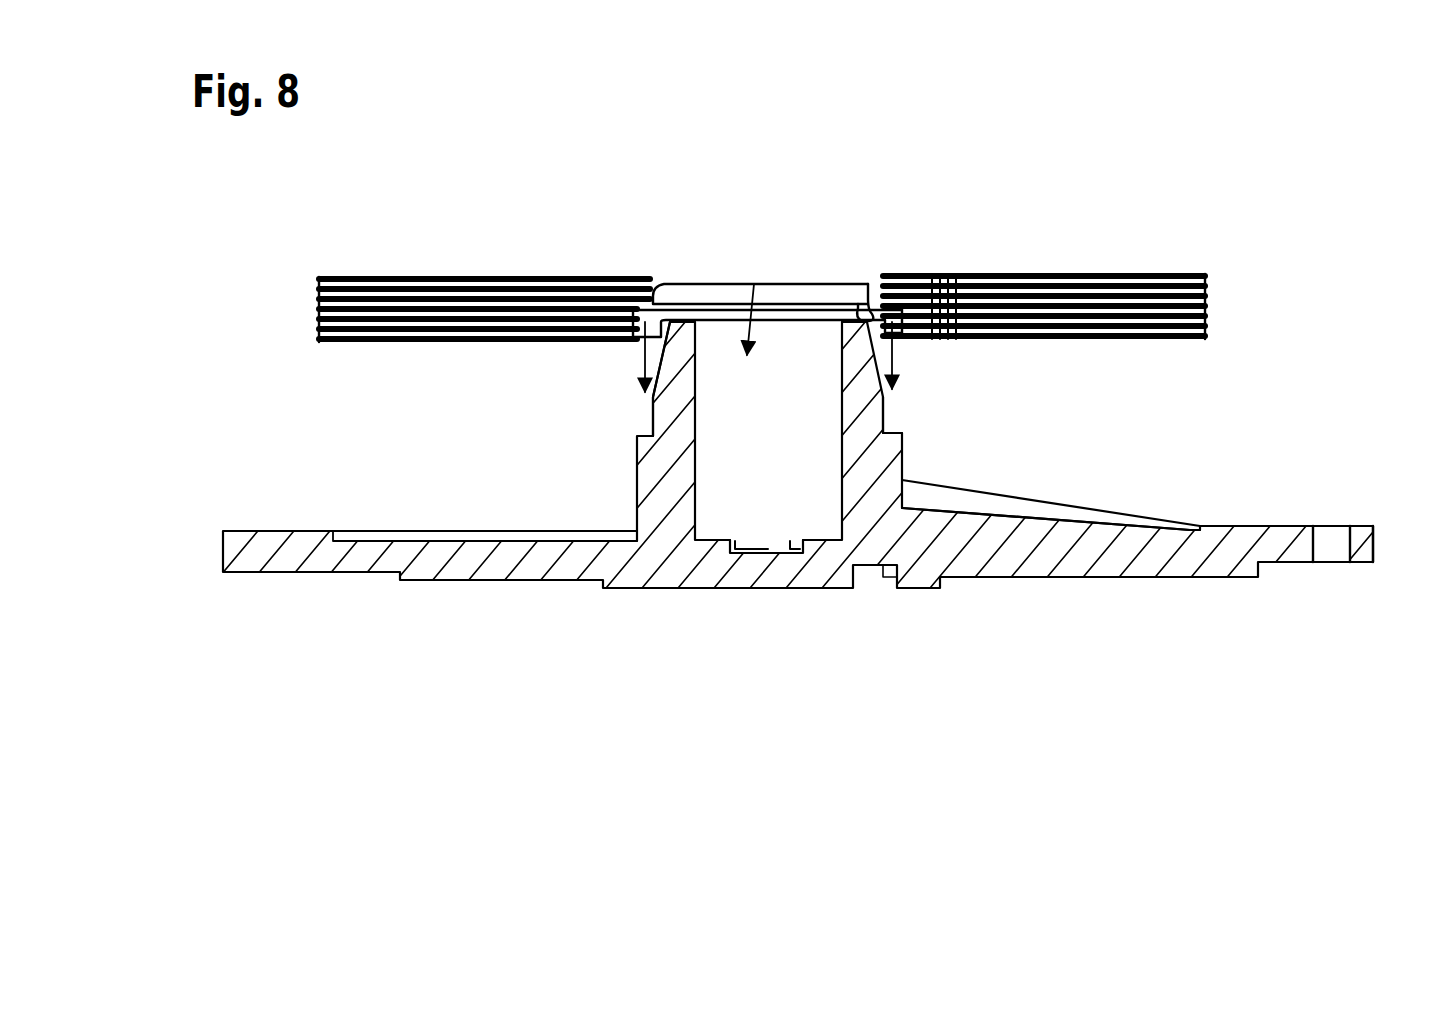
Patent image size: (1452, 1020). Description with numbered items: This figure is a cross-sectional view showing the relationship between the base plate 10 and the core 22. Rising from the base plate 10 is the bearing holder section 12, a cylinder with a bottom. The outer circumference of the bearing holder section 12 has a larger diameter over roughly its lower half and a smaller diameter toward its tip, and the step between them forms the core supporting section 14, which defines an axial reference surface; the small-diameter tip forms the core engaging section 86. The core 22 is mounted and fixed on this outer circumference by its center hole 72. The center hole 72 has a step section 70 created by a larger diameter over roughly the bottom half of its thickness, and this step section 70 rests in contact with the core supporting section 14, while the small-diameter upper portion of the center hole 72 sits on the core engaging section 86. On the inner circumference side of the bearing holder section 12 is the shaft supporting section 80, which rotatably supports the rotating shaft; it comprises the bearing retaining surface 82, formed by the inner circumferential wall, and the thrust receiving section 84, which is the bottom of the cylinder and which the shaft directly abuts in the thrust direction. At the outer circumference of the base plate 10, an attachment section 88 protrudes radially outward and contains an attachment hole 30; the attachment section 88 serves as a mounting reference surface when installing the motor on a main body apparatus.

The base plate 10 is at (1055, 567).
The bearing holder section 12 is at (637, 493).
The core supporting section 14 is at (650, 437).
The core 22 is at (1122, 276).
The attachment hole 30 is at (1330, 553).
The step section 70 is at (864, 284).
The center hole 72 is at (676, 284).
The shaft supporting section 80 is at (754, 284).
The bearing retaining surface 82 is at (840, 433).
The thrust receiving section 84 is at (762, 540).
The core engaging section 86 is at (883, 412).
The attachment section 88 is at (1298, 523).